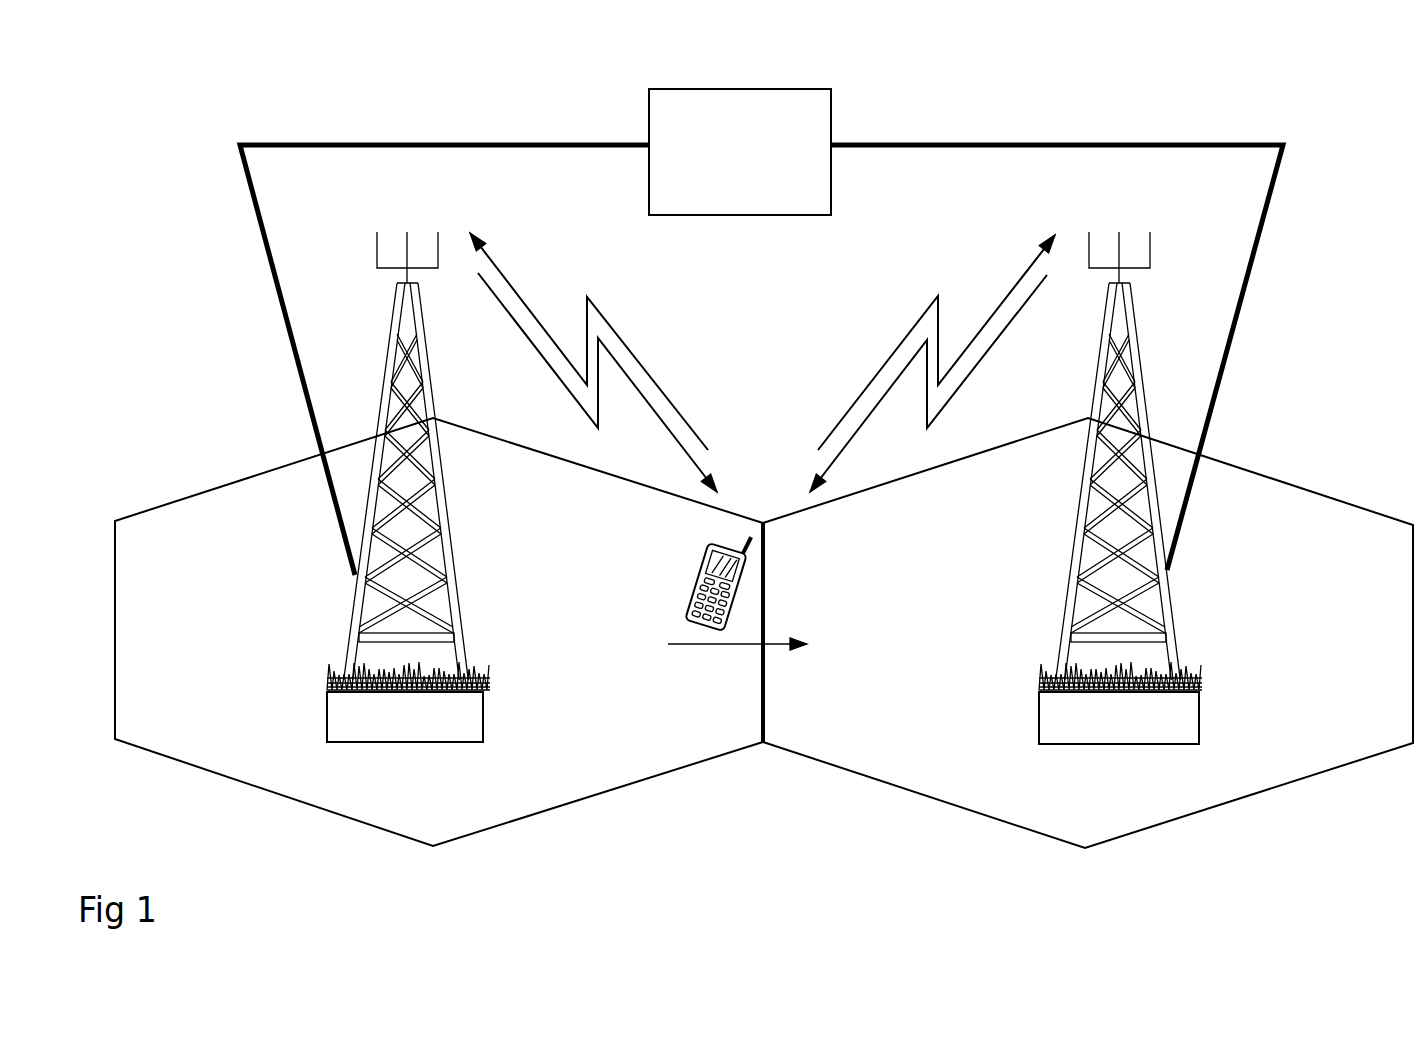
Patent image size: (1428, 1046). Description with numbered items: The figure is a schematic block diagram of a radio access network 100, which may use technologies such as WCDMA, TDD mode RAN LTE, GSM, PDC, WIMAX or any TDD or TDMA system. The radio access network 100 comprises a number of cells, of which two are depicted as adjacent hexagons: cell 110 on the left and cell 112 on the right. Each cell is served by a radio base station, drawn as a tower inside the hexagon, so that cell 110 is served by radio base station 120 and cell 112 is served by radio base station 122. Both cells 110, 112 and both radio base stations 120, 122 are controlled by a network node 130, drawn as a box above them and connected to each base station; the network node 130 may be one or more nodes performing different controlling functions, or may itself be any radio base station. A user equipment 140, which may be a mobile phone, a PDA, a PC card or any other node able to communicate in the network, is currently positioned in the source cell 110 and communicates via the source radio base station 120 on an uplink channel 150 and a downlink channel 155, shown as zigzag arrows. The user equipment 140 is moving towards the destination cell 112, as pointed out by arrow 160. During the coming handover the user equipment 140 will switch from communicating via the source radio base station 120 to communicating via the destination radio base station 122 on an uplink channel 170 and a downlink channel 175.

The radio access network 100 is at (779, 838).
The cell 110 is at (237, 757).
The cell 112 is at (1332, 737).
The radio base station 120 is at (408, 487).
The radio base station 122 is at (1120, 488).
The network node 130 is at (761, 332).
The user equipment 140 is at (698, 566).
The uplink channel 150 is at (538, 275).
The downlink channel 155 is at (529, 344).
The arrow 160 is at (733, 640).
The uplink channel 170 is at (995, 308).
The downlink channel 175 is at (1017, 380).